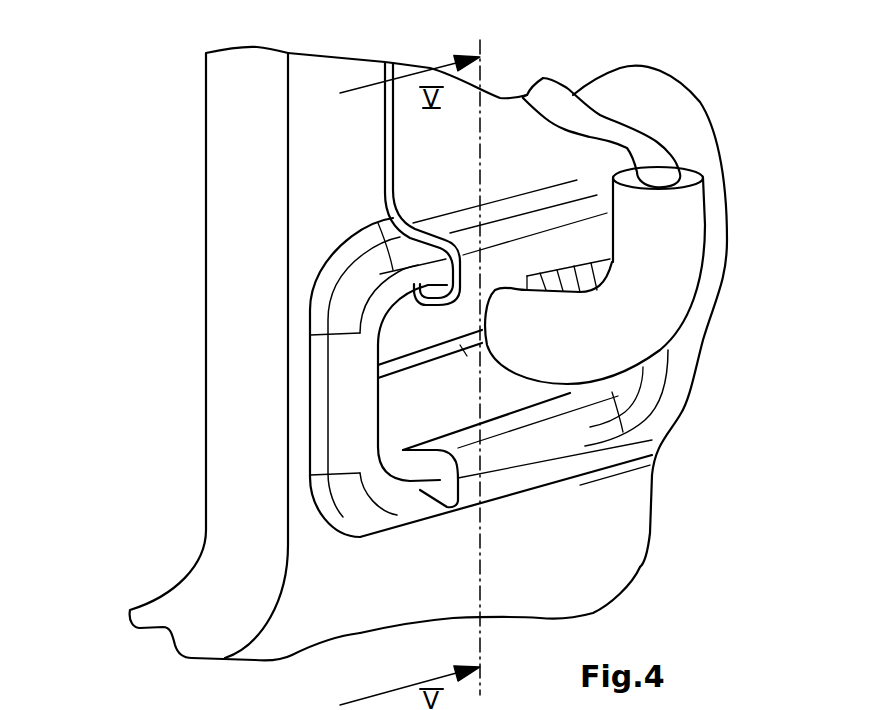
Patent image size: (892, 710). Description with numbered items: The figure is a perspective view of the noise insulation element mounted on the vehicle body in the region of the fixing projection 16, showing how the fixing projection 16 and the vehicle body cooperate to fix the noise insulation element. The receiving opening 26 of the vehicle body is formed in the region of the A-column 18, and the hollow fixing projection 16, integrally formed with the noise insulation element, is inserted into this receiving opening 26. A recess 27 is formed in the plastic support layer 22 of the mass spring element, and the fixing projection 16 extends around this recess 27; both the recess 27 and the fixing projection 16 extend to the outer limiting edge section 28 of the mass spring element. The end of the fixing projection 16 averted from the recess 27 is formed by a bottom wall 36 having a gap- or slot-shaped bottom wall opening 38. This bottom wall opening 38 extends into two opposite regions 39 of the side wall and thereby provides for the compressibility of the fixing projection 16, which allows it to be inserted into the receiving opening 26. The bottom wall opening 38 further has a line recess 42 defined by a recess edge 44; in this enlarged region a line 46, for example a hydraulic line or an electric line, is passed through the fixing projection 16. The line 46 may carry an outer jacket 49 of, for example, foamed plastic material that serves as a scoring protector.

The fixing projection 16 is at (483, 328).
The A-column 18 is at (232, 222).
The plastic support layer 22 is at (450, 140).
The receiving opening 26 is at (463, 423).
The recess 27 is at (428, 478).
The outer limiting edge section 28 is at (385, 148).
The bottom wall 36 is at (407, 407).
The bottom wall opening 38 is at (410, 360).
The region of the side wall 39 is at (613, 393).
The line recess 42 is at (527, 276).
The recess edge 44 is at (490, 392).
The line 46 is at (627, 138).
The outer jacket 49 is at (660, 230).